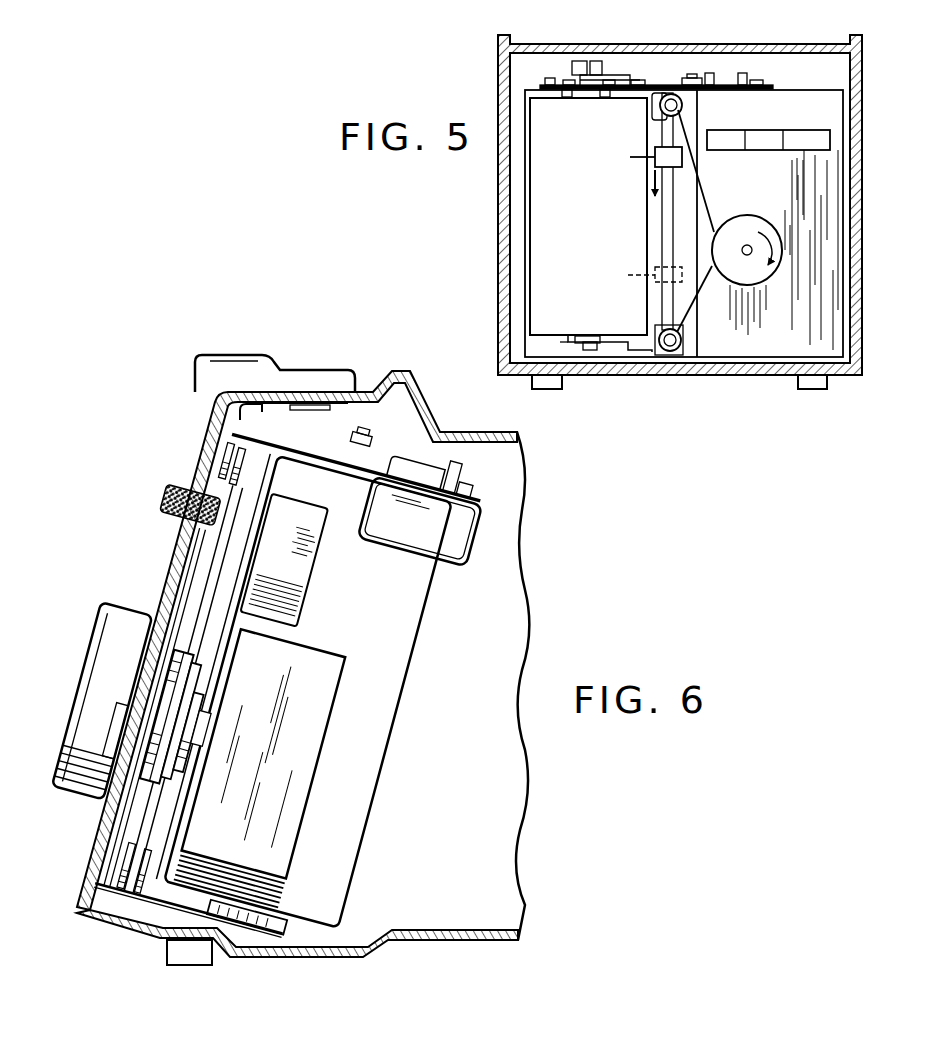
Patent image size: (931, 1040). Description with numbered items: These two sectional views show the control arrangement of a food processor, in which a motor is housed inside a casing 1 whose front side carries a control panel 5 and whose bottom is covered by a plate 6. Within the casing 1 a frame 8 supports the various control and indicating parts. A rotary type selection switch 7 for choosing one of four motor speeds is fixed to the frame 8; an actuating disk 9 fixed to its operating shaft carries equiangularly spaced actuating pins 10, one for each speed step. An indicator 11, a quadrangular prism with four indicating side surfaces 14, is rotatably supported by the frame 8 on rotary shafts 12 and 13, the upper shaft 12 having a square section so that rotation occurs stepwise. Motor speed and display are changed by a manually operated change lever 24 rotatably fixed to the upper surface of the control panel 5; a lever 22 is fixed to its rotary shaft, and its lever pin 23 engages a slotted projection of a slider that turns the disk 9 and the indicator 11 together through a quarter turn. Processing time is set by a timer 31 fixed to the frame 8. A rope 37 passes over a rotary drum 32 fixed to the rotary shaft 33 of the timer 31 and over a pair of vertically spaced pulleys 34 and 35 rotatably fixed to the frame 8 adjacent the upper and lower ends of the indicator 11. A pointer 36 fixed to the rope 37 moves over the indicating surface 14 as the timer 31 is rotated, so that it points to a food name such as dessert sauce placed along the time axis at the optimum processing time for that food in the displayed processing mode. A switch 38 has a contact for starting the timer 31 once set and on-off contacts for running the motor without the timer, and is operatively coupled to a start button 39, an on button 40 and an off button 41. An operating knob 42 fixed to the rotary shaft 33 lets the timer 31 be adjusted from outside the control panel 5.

In FIG. 6, the casing 1 is at (478, 430).
In FIG. 6, the control panel 5 is at (118, 833).
In FIG. 6, the plate 6 is at (470, 940).
In FIG. 6, the rotary type selection switch 7 is at (468, 540).
In FIG. 5, the frame 8 is at (822, 222).
In FIG. 6, the frame 8 is at (222, 643).
In FIG. 5, the actuating disk 9 is at (730, 75).
In FIG. 6, the actuating disk 9 is at (468, 490).
In FIG. 5, the actuating pins 10 is at (708, 72).
In FIG. 6, the actuating pins 10 is at (456, 466).
In FIG. 5, the indicator 11 is at (528, 188).
In FIG. 5, the rotary shaft 12 is at (583, 82).
In FIG. 5, the rotary shaft 13 is at (589, 352).
In FIG. 5, the indicating side surface 14 is at (530, 269).
In FIG. 6, the lever 22 is at (272, 402).
In FIG. 6, the lever pin 23 is at (243, 417).
In FIG. 6, the change lever 24 is at (207, 360).
In FIG. 6, the timer 31 is at (318, 686).
In FIG. 5, the rotary drum 32 is at (742, 278).
In FIG. 6, the rotary drum 32 is at (133, 785).
In FIG. 5, the rotary shaft 33 is at (749, 254).
In FIG. 6, the rotary shaft 33 is at (200, 735).
In FIG. 5, the pulley 34 is at (664, 94).
In FIG. 6, the pulley 34 is at (228, 460).
In FIG. 5, the pulley 35 is at (668, 355).
In FIG. 6, the pulley 35 is at (122, 868).
In FIG. 5, the pointer 36 is at (683, 158).
In FIG. 5, the rope 37 is at (702, 290).
In FIG. 6, the rope 37 is at (205, 573).
In FIG. 6, the switch 38 is at (310, 562).
In FIG. 5, the start button 39 is at (795, 152).
In FIG. 6, the start button 39 is at (162, 506).
In FIG. 5, the on button 40 is at (765, 130).
In FIG. 5, the off button 41 is at (729, 130).
In FIG. 6, the operating knob 42 is at (100, 660).